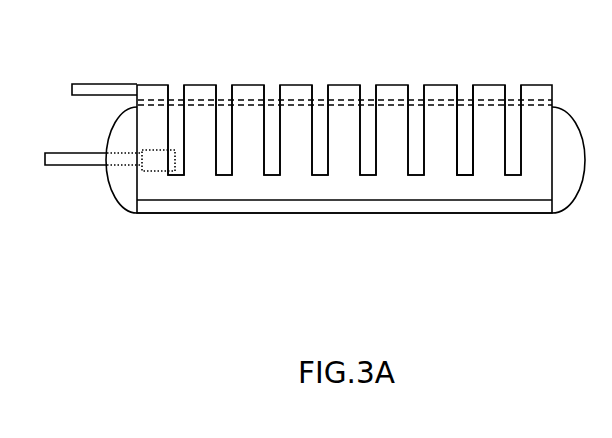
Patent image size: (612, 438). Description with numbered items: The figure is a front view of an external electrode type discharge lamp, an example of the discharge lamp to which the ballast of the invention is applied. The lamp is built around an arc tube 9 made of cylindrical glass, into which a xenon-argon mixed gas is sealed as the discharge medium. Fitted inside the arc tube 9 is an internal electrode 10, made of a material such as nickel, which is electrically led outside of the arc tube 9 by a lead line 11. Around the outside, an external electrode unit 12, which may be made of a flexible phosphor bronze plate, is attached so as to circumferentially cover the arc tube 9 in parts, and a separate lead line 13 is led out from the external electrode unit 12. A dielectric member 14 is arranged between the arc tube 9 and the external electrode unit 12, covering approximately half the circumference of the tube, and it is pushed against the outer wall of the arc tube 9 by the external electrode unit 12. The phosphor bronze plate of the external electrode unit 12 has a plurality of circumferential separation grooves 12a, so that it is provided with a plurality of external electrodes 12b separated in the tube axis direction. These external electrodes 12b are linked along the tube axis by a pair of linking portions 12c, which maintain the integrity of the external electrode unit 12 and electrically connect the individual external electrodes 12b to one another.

The arc tube 9 is at (563, 201).
The internal electrode 10 is at (154, 172).
The lead line 11 is at (90, 160).
The external electrode unit 12 is at (325, 69).
The circumferential separation groove 12a is at (367, 93).
The external electrode 12b is at (390, 88).
The linking portion 12c is at (273, 192).
The lead line 13 is at (85, 87).
The dielectric member 14 is at (461, 120).